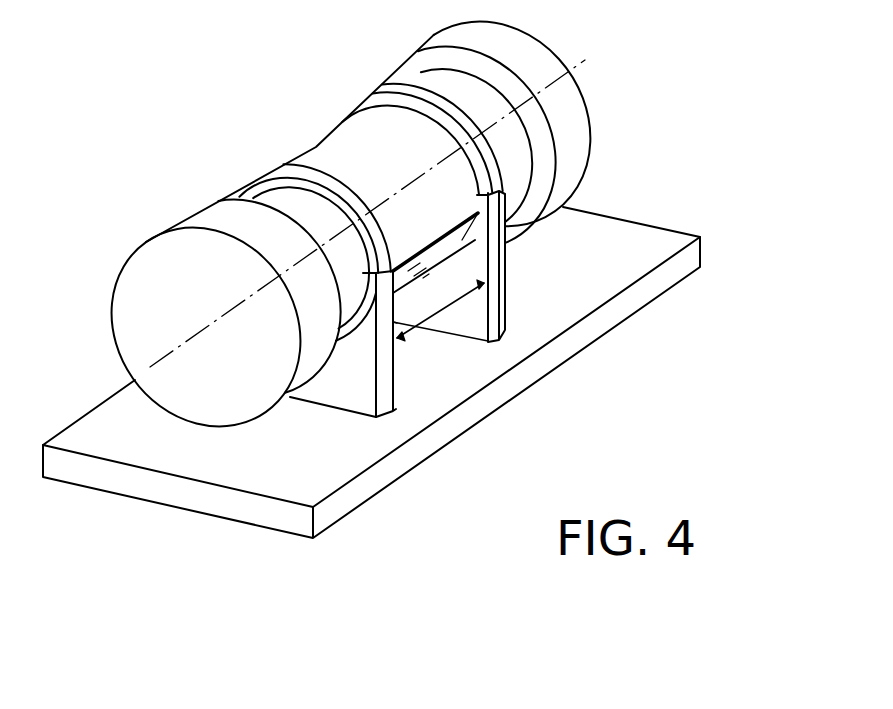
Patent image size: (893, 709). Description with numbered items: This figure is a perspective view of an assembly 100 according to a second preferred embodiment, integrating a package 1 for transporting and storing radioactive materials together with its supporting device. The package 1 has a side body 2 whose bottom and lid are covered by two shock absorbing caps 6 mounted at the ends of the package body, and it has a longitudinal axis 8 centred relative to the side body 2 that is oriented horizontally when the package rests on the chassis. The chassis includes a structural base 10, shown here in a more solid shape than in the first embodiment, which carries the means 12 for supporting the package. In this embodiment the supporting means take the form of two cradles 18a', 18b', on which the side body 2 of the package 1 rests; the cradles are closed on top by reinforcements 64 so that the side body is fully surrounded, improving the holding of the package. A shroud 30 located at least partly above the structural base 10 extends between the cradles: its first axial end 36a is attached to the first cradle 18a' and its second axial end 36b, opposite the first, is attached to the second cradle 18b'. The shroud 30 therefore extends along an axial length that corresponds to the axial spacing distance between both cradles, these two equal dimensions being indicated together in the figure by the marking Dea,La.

The package 1 is at (310, 126).
The side body 2 is at (316, 163).
The shock absorbing caps 6 is at (140, 277).
The longitudinal axis 8 is at (157, 357).
The structural base 10 is at (267, 545).
The means for supporting the package 12 is at (315, 413).
The first cradle 18a' is at (410, 403).
The second cradle 18b' is at (543, 305).
The shroud 30 is at (437, 240).
The first axial end of the shroud 36a is at (395, 323).
The second axial end of the shroud 36b is at (462, 240).
The reinforcements 64 is at (367, 107).
The assembly 100 is at (250, 151).
The axial spacing distance and axial length Dea,La is at (444, 314).